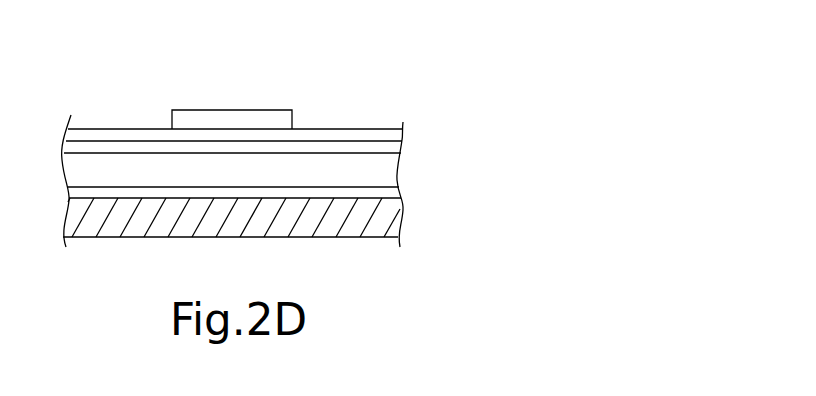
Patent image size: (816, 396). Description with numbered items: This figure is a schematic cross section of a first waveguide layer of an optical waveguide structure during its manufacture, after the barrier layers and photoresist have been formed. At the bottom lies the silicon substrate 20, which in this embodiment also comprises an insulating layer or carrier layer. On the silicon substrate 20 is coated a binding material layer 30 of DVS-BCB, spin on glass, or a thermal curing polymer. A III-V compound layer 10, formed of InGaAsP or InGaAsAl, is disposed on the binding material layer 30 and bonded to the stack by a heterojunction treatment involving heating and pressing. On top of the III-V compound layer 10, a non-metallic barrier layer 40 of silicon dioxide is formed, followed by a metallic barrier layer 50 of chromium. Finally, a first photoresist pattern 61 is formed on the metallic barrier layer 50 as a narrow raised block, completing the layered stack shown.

The first photoresist pattern 61 is at (275, 118).
The metallic barrier layer 50 is at (343, 134).
The non-metallic barrier layer 40 is at (390, 153).
The III-V compound layer 10 is at (385, 172).
The binding material layer 30 is at (387, 195).
The silicon substrate 20 is at (388, 225).